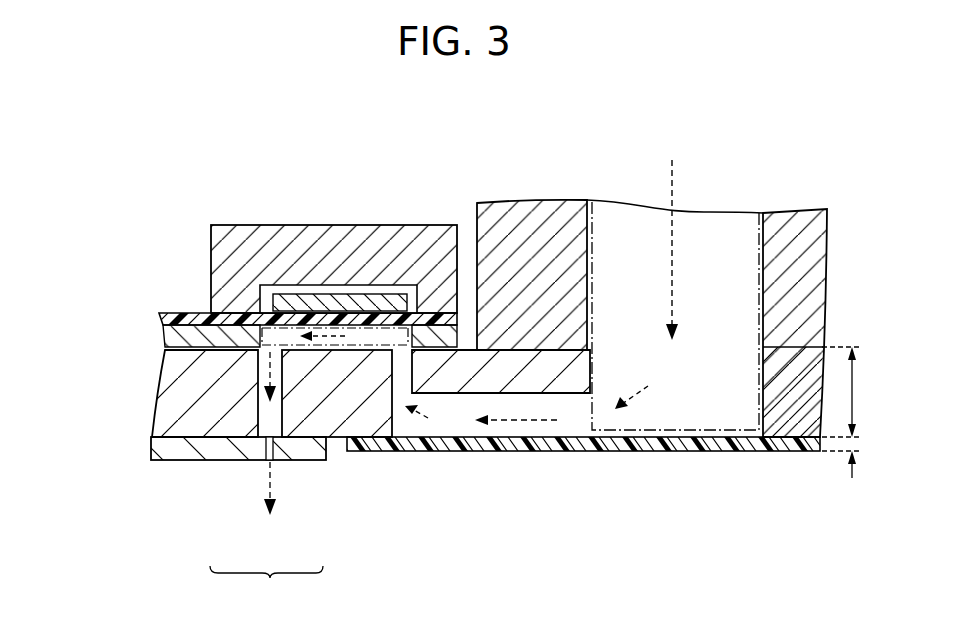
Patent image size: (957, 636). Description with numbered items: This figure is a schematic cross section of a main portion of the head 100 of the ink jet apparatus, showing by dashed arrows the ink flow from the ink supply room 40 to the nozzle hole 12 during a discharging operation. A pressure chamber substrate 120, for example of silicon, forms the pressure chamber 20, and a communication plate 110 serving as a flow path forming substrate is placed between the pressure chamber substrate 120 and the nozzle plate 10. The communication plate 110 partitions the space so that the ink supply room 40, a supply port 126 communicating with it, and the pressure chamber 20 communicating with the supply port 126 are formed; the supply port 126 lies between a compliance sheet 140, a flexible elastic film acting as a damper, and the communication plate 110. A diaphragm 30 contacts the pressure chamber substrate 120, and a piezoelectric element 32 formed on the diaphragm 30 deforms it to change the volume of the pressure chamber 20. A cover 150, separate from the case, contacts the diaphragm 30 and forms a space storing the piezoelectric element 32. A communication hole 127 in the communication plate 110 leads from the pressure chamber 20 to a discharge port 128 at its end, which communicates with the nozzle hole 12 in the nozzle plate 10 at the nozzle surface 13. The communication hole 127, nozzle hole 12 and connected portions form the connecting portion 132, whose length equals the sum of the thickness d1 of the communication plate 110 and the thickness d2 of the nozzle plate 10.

The head 100 is at (775, 132).
The communication plate 110 is at (168, 414).
The pressure chamber substrate 120 is at (172, 330).
The compliance sheet 140 is at (670, 444).
The cover 150 is at (364, 232).
The nozzle plate 10 is at (182, 450).
The nozzle hole 12 is at (272, 455).
The nozzle surface 13 is at (210, 460).
The pressure chamber 20 is at (253, 350).
The diaphragm 30 is at (185, 318).
The piezoelectric element 32 is at (290, 300).
The ink supply room 40 is at (625, 222).
The supply port 126 is at (530, 430).
The communication hole 127 is at (268, 412).
The discharge port 128 is at (276, 444).
The connecting portion 132 is at (266, 590).
The length of the communication plate in the thickness direction d1 is at (853, 392).
The length of the nozzle plate in the thickness direction d2 is at (853, 455).